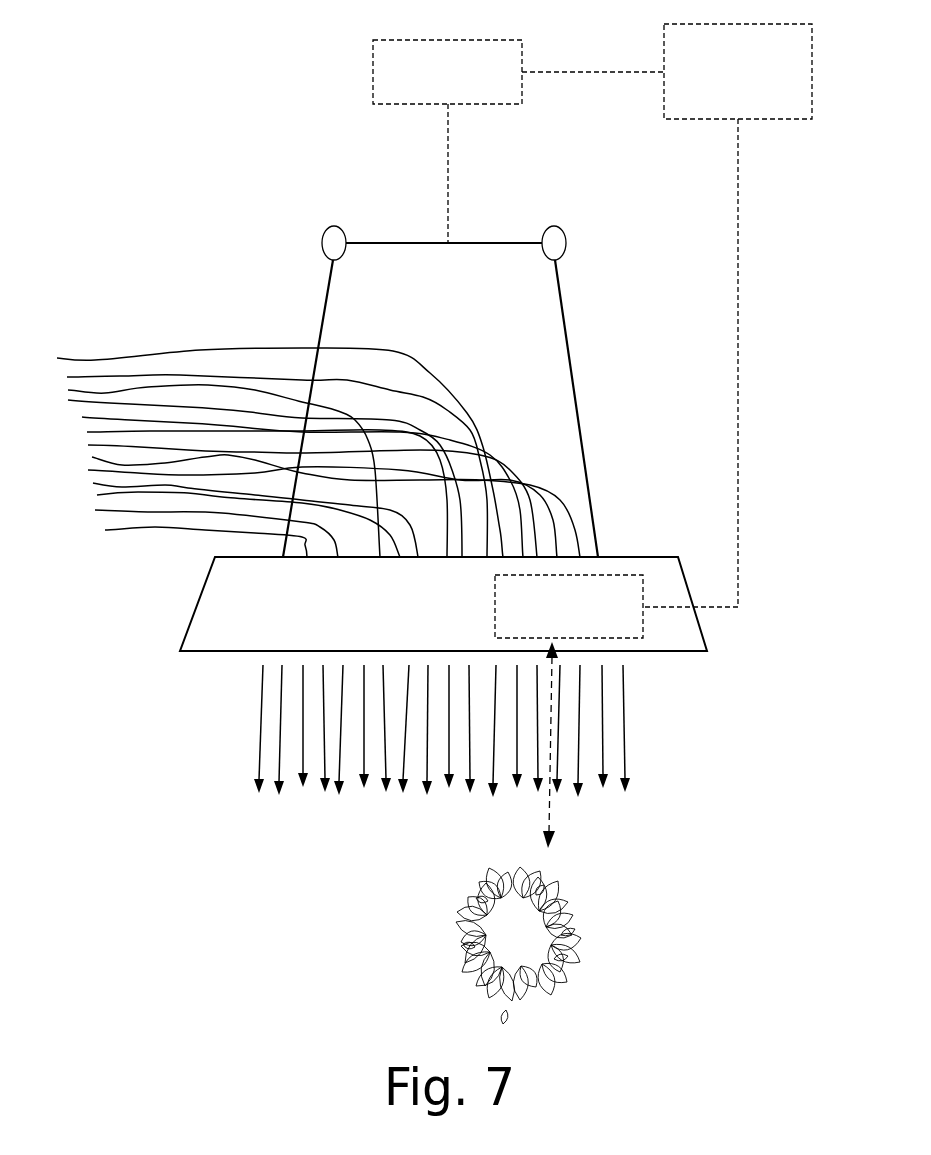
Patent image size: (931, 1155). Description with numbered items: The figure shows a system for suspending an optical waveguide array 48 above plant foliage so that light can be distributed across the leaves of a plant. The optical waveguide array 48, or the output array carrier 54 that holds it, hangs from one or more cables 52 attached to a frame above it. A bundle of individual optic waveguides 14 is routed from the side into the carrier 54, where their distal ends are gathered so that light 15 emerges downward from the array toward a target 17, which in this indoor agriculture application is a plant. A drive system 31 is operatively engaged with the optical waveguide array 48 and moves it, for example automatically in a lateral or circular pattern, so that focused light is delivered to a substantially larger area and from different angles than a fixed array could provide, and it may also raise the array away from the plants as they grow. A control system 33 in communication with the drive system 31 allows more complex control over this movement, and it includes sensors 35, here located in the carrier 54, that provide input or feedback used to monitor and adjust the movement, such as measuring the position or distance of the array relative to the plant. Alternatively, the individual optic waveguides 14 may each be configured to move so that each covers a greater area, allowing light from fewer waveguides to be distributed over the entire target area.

The optical waveguides 14 is at (213, 349).
The light 15 is at (624, 734).
The target 17 is at (590, 937).
The drive system 31 is at (518, 141).
The control system 33 is at (738, 71).
The sensors 35 is at (569, 711).
The optical waveguide array 48 is at (772, 582).
The cables 52 is at (568, 351).
The base/head 54 is at (252, 609).